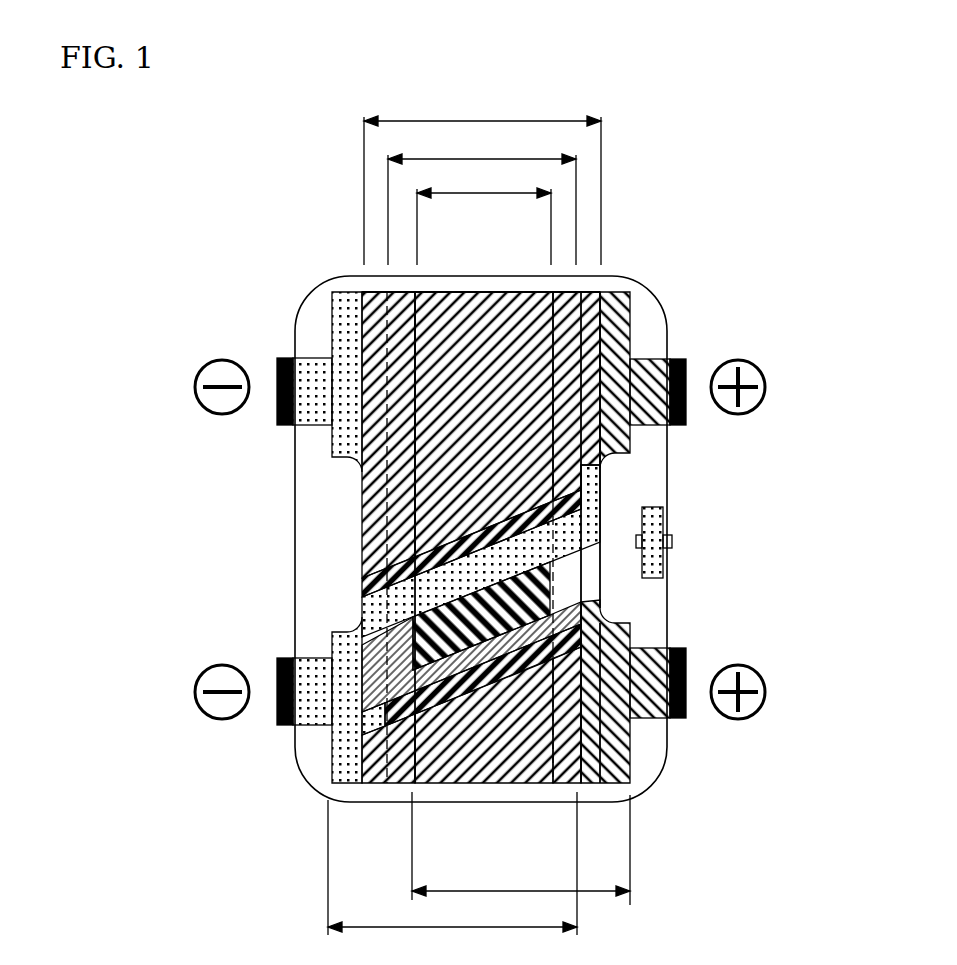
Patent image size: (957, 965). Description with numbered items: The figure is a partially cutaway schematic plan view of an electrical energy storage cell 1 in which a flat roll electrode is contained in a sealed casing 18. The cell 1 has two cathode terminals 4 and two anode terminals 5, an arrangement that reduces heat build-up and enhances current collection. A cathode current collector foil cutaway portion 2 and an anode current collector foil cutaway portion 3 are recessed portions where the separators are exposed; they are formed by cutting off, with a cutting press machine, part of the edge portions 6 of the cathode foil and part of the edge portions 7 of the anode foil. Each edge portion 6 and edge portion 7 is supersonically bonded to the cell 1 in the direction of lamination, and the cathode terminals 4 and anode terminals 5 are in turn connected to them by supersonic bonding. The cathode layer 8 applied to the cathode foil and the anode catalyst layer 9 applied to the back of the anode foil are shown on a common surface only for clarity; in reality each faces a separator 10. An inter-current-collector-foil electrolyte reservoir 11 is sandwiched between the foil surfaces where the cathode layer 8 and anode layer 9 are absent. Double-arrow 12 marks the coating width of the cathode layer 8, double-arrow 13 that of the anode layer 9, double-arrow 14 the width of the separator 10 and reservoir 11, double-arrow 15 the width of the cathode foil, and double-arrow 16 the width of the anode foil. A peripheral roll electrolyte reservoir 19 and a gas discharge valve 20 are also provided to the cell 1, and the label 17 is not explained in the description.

The electrical energy storage cell 1 is at (473, 490).
The cathode current collector foil cutaway portion 2 is at (612, 538).
The anode current collector foil cutaway portion 3 is at (348, 542).
The cathode terminal 4 is at (655, 378).
The anode terminal 5 is at (312, 383).
The edge portion of the cathode current collector foil 6 is at (617, 320).
The edge portion of the anode current collector foil 7 is at (340, 328).
The cathode layer 8 is at (365, 628).
The anode catalyst layer 9 is at (420, 558).
The separator 10 is at (477, 580).
The inter-current-collector-foil electrolyte reservoir 11 is at (370, 690).
The double-arrow 12 is at (484, 216).
The double-arrow 13 is at (482, 199).
The double-arrow 14 is at (482, 179).
The double-arrow 15 is at (521, 848).
The double-arrow 16 is at (452, 863).
The first capacitor element 17 is at (347, 285).
The sealed casing 18 is at (480, 292).
The peripheral roll electrolyte reservoir 19 is at (470, 380).
The gas discharge valve 20 is at (663, 530).